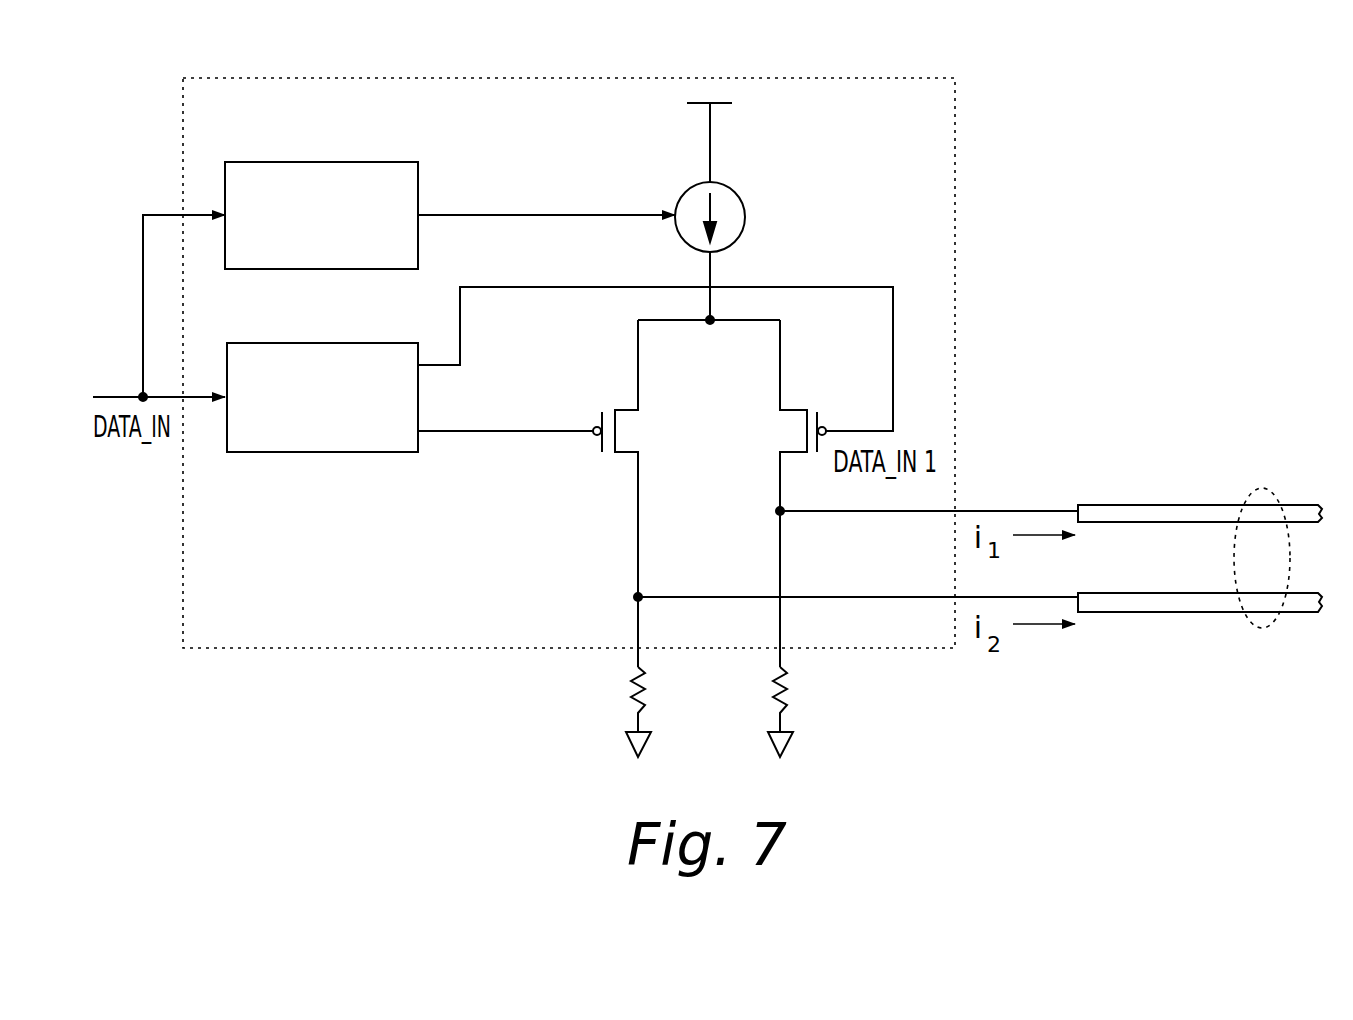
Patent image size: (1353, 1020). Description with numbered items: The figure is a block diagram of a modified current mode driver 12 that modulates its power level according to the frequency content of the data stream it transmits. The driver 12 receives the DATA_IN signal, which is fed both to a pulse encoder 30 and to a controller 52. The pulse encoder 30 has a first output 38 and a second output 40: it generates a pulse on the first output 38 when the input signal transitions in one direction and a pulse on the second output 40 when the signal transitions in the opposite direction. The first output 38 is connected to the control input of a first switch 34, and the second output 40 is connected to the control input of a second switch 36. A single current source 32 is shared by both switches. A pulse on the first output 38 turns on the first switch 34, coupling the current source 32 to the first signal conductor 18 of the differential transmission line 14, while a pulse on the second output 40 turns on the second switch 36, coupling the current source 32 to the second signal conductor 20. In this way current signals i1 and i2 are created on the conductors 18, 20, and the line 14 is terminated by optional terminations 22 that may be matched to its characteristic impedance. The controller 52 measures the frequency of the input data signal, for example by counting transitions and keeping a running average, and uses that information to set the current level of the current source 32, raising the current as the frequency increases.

The driver 12 is at (568, 76).
The differential transmission line 14 is at (1260, 488).
The first signal conductor 18 is at (1160, 505).
The second signal conductor 20 is at (1159, 612).
The terminations 22 is at (628, 704).
The pulse encoder 30 is at (320, 340).
The current source 32 is at (728, 180).
The first switch 34 is at (792, 410).
The second switch 36 is at (628, 410).
The first output 38 is at (505, 284).
The second output 40 is at (505, 429).
The controller 52 is at (320, 159).